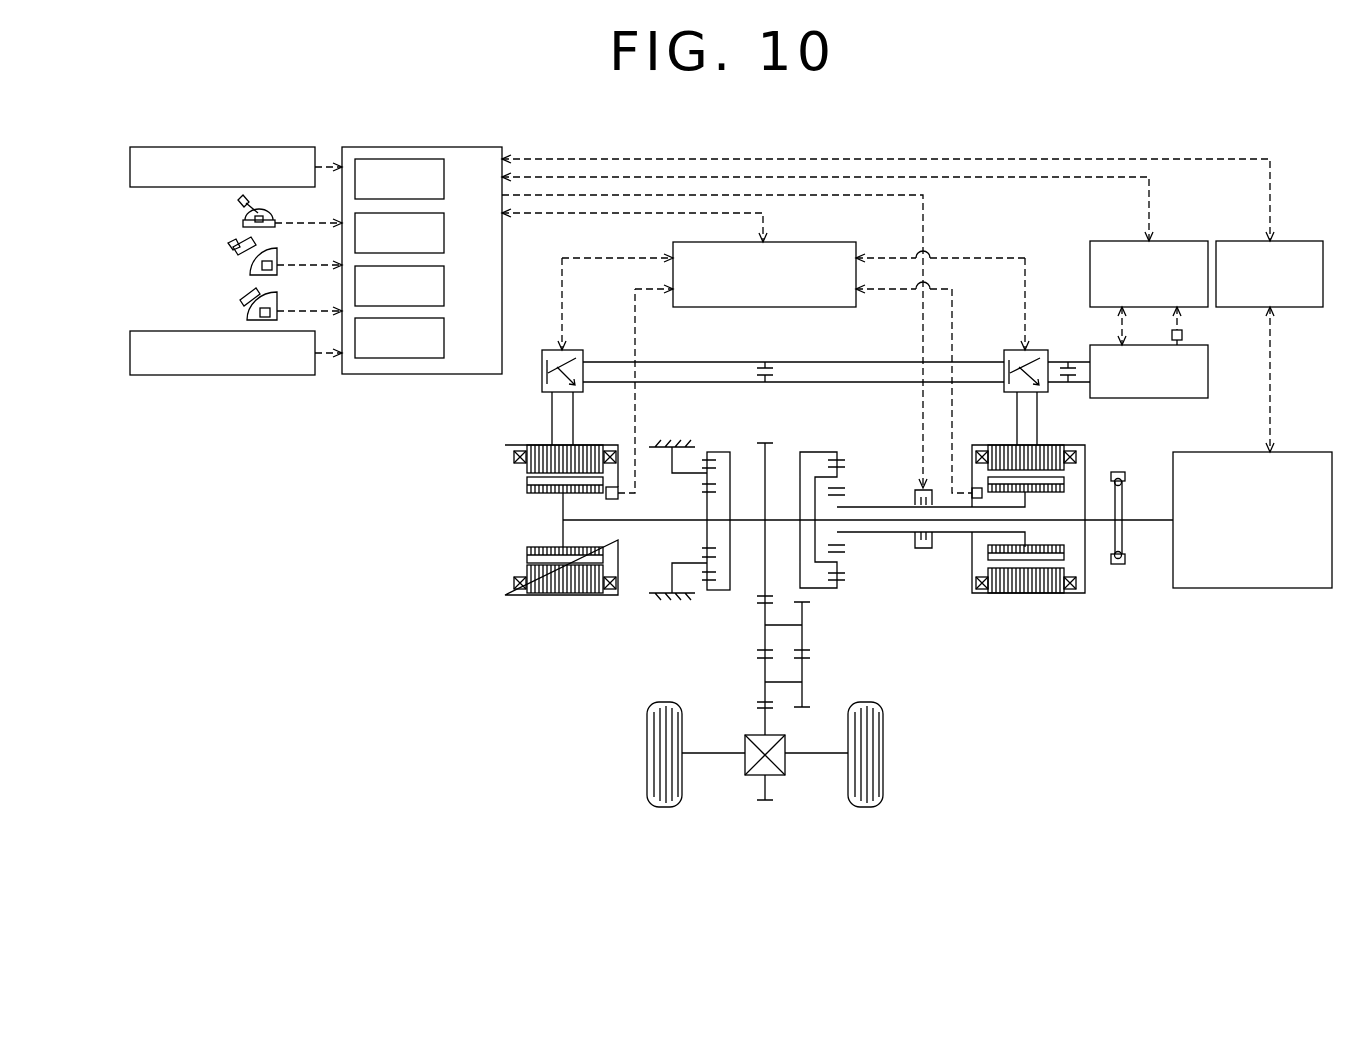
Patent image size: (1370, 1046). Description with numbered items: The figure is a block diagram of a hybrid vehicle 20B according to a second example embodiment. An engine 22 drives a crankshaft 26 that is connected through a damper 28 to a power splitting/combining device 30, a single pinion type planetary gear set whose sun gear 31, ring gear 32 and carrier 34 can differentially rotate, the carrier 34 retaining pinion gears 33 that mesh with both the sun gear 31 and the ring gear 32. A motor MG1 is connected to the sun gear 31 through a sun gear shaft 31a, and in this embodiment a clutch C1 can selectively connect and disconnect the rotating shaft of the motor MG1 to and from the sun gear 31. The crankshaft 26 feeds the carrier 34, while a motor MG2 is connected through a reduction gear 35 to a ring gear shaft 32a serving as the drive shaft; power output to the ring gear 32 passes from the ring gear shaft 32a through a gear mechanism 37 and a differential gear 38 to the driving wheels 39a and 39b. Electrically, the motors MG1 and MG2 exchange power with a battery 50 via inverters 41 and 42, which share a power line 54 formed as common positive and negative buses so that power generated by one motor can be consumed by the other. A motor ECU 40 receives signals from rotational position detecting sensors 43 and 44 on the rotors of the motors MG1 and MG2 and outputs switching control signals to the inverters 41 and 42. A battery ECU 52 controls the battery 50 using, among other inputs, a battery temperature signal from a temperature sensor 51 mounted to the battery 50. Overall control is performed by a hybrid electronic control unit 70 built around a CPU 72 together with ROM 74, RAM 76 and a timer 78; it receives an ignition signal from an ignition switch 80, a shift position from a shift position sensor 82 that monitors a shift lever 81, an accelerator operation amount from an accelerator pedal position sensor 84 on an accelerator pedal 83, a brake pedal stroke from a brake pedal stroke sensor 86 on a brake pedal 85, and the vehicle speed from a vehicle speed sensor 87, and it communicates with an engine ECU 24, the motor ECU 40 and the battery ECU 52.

The hybrid vehicle 20B is at (1086, 132).
The engine 22 is at (1305, 452).
The engine ECU 24 is at (1305, 240).
The crankshaft 26 is at (1150, 522).
The damper 28 is at (1117, 565).
The power splitting/combining device 30 is at (849, 445).
The sun gear 31 is at (845, 545).
The sun gear shaft 31a is at (850, 502).
The ring gear 32 is at (840, 590).
The ring gear shaft 32a is at (760, 518).
The pinion gears 33 is at (845, 568).
The carrier 34 is at (820, 456).
The reduction gear 35 is at (718, 600).
The gear mechanism 37 is at (816, 665).
The differential gear 38 is at (777, 778).
The wheel 39a is at (646, 753).
The wheel 39b is at (884, 753).
The motor ECU 40 is at (840, 240).
The inverter 41 is at (1040, 350).
The inverter 42 is at (568, 350).
The rotational position detecting sensor 43 is at (977, 498).
The rotational position detecting sensor 44 is at (609, 487).
The battery 50 is at (1183, 398).
The temperature sensor 51 is at (1183, 334).
The battery ECU 52 is at (1190, 240).
The power line 54 is at (830, 385).
The hybrid electronic control unit 70 is at (433, 147).
The CPU 72 is at (446, 181).
The ROM 74 is at (446, 233).
The RAM 76 is at (446, 286).
The timer 78 is at (446, 339).
The ignition switch 80 is at (222, 147).
The shift lever 81 is at (238, 204).
The shift position sensor 82 is at (243, 224).
The accelerator pedal 83 is at (232, 248).
The accelerator pedal position sensor 84 is at (252, 272).
The brake pedal 85 is at (240, 298).
The brake pedal stroke sensor 86 is at (248, 318).
The vehicle speed sensor 87 is at (238, 376).
The motor MG1 is at (1020, 597).
The motor MG2 is at (560, 597).
The clutch C1 is at (930, 556).